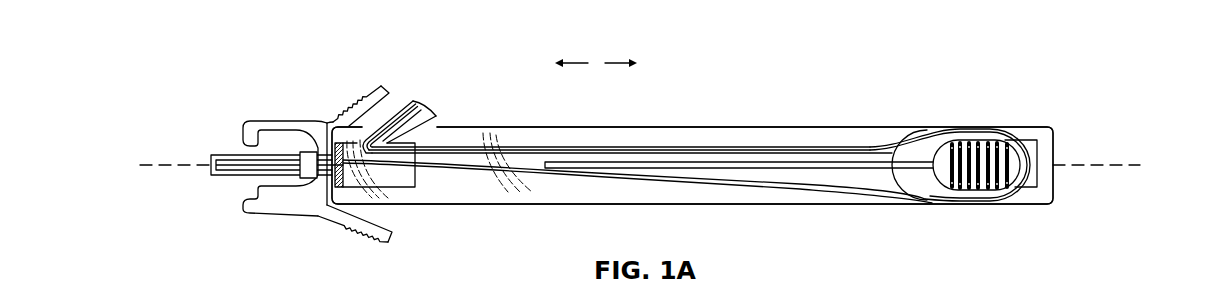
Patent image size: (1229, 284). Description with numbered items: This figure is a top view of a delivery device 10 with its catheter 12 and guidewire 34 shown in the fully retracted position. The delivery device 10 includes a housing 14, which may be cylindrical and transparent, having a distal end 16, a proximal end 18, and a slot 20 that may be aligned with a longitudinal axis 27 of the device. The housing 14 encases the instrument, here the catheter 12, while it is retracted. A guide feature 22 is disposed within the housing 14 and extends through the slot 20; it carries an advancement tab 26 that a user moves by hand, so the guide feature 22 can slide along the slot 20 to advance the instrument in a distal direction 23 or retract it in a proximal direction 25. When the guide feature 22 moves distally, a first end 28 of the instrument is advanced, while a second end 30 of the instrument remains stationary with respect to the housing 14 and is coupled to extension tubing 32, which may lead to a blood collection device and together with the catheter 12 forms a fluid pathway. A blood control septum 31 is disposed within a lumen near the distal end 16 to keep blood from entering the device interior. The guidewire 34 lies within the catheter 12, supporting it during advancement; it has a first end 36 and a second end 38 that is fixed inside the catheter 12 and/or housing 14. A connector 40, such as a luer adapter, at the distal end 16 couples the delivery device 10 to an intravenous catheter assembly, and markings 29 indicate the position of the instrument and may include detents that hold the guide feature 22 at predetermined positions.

The delivery device 10 is at (1129, 77).
The catheter 12 is at (580, 176).
The housing 14 is at (533, 126).
The distal end 16 is at (356, 114).
The proximal end 18 is at (1055, 107).
The slot 20 is at (692, 161).
The guide feature 22 is at (913, 155).
The distal direction 23 is at (576, 60).
The proximal direction 25 is at (616, 60).
The advancement tab 26 is at (1012, 158).
The longitudinal axis 27 is at (188, 168).
The first end 28 is at (226, 155).
The markings 29 is at (748, 172).
The second end 30 is at (439, 113).
The blood control septum 31 is at (348, 150).
The extension tubing 32 is at (419, 92).
The guidewire 34 is at (640, 146).
The first end 36 is at (752, 182).
The second end 38 is at (392, 157).
The connector 40 is at (263, 121).